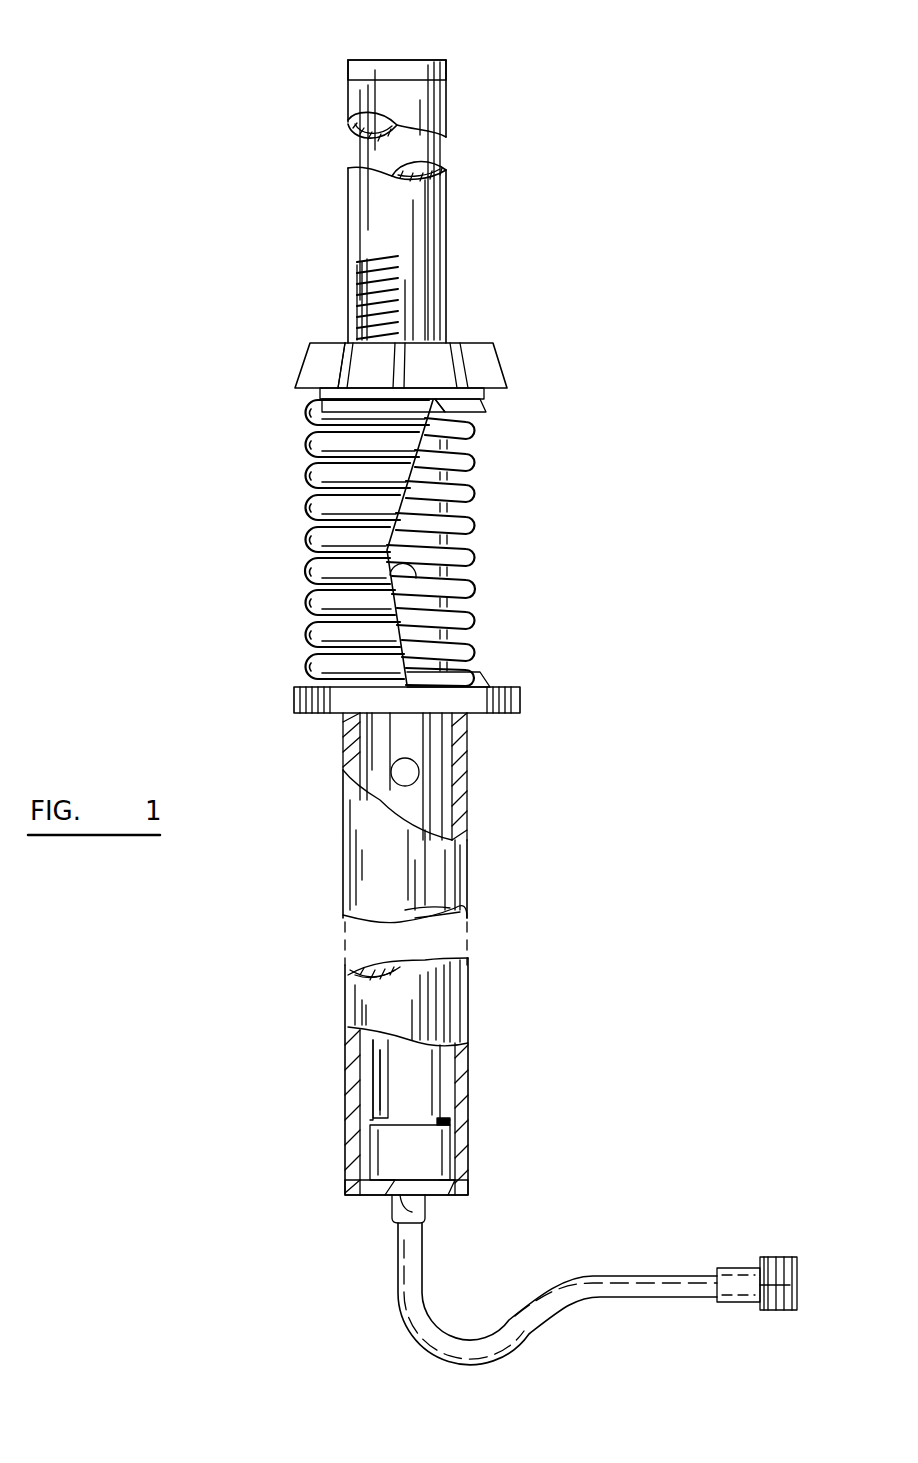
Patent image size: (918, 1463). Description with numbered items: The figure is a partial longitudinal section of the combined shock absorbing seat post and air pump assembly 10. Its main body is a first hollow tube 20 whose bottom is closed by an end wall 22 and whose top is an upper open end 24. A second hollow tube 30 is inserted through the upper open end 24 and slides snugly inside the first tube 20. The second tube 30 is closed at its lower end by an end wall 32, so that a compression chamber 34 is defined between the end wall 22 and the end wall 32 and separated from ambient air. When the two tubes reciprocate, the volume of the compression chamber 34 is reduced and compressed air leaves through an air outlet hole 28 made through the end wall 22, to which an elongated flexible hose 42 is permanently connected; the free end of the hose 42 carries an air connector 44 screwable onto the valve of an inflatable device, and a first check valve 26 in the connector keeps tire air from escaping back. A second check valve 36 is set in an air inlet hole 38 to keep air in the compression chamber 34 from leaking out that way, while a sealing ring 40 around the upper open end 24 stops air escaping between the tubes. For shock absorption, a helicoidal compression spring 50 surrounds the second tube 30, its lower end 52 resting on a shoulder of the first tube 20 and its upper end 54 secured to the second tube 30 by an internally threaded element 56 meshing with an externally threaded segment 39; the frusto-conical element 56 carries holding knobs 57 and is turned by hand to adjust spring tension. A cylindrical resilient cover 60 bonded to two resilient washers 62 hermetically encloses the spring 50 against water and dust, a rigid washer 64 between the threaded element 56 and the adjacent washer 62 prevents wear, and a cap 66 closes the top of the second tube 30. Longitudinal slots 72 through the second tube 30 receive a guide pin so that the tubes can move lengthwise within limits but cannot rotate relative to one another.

The combined shock absorbing seat post and air pump assembly 10 is at (585, 267).
The first hollow tube 20 is at (470, 866).
The end wall 22 is at (462, 1195).
The upper open end 24 is at (470, 718).
The first check valve 26 is at (800, 1287).
The air outlet hole 28 is at (395, 1210).
The second hollow tube 30 is at (447, 214).
The end wall 32 is at (405, 1158).
The compression chamber 34 is at (375, 1180).
The second check valve 36 is at (408, 1115).
The air inlet hole 38 is at (390, 1120).
The externally threaded segment 39 is at (447, 312).
The sealing ring 40 is at (520, 700).
The elongated flexible hose 42 is at (563, 1318).
The air connector 44 is at (775, 1262).
The helicoidal compression spring 50 is at (386, 543).
The lower end 52 is at (478, 672).
The upper end 54 is at (478, 412).
The internally threaded element 56 is at (300, 370).
The holding knobs 57 is at (312, 350).
The cylindrical resilient cover 60 is at (305, 545).
The resilient washers 62 is at (484, 405).
The rigid washer 64 is at (312, 394).
The cap 66 is at (447, 66).
The longitudinal slots 72 is at (420, 778).